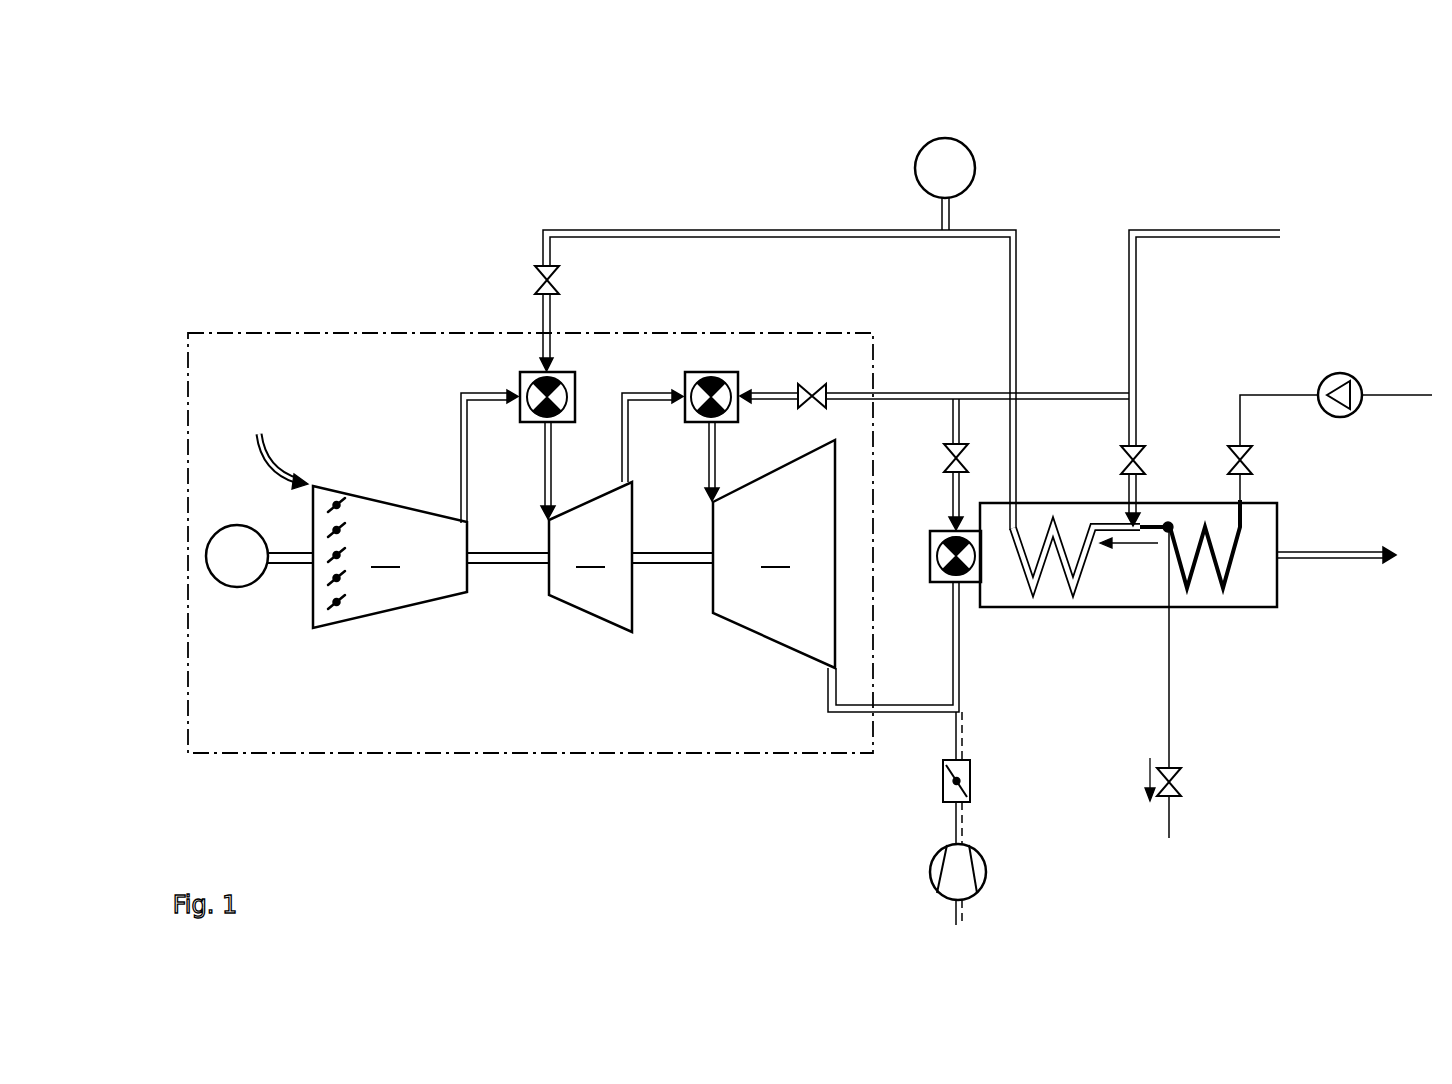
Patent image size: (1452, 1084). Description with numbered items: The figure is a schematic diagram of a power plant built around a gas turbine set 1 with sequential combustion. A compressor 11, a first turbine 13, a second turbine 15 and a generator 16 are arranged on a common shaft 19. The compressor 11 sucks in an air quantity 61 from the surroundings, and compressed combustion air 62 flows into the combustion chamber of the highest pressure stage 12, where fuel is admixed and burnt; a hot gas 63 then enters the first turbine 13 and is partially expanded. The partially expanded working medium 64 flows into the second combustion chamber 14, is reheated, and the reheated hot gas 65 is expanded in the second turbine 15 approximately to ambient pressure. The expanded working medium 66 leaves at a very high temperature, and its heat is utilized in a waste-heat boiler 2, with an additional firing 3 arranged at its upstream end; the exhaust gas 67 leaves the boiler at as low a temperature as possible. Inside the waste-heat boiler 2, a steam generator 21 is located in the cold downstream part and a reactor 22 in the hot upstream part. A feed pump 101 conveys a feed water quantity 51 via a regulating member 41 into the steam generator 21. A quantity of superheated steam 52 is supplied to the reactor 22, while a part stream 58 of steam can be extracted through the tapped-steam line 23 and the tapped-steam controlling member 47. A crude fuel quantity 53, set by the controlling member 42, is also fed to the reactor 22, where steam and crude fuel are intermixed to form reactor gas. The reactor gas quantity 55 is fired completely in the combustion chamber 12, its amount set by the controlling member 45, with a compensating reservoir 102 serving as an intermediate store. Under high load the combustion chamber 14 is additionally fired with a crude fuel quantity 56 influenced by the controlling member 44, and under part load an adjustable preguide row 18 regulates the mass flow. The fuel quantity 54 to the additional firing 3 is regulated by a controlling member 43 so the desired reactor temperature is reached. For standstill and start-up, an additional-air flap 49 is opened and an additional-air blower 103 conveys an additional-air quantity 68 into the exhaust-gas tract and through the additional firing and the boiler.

The gas turbine set 1 is at (575, 753).
The waste-heat boiler 2 is at (1206, 612).
The additional firing 3 is at (946, 556).
The compressor 11 is at (390, 557).
The combustion chamber of the highest pressure stage 12 is at (532, 280).
The first turbine 13 is at (590, 557).
The second combustion chamber 14 is at (707, 383).
The second turbine 15 is at (774, 554).
The generator 16 is at (224, 572).
The adjustable preguide row 18 is at (337, 607).
The common shaft 19 is at (287, 557).
The steam generator 21 is at (1238, 712).
The reactor 22 is at (1076, 725).
The tapped-steam line 23 is at (1215, 725).
The regulating member 41 is at (1248, 460).
The controlling member 42 is at (1141, 460).
The controlling member 43 is at (963, 458).
The controlling member 44 is at (812, 411).
The controlling member 45 is at (556, 280).
The tapped-steam controlling member 47 is at (1178, 782).
The additional-air flap 49 is at (950, 792).
The feed water quantity 51 is at (1203, 332).
The superheated steam quantity 52 is at (1099, 765).
The crude fuel quantity 53 is at (1096, 308).
The fuel quantity 54 is at (931, 470).
The reactor gas quantity 55 is at (652, 220).
The crude fuel quantity 56 is at (833, 373).
The part stream of steam 58 is at (1139, 841).
The air quantity 61 is at (267, 463).
The compressed combustion air 62 is at (436, 330).
The hot gas 63 is at (489, 328).
The partially expanded working medium 64 is at (643, 393).
The reheated hot gas 65 is at (742, 383).
The expanded working medium 66 is at (906, 712).
The exhaust gas 67 is at (1358, 602).
The additional-air quantity 68 is at (893, 842).
The feed pump 101 is at (1340, 373).
The compensating reservoir 102 is at (948, 168).
The additional-air blower 103 is at (952, 876).